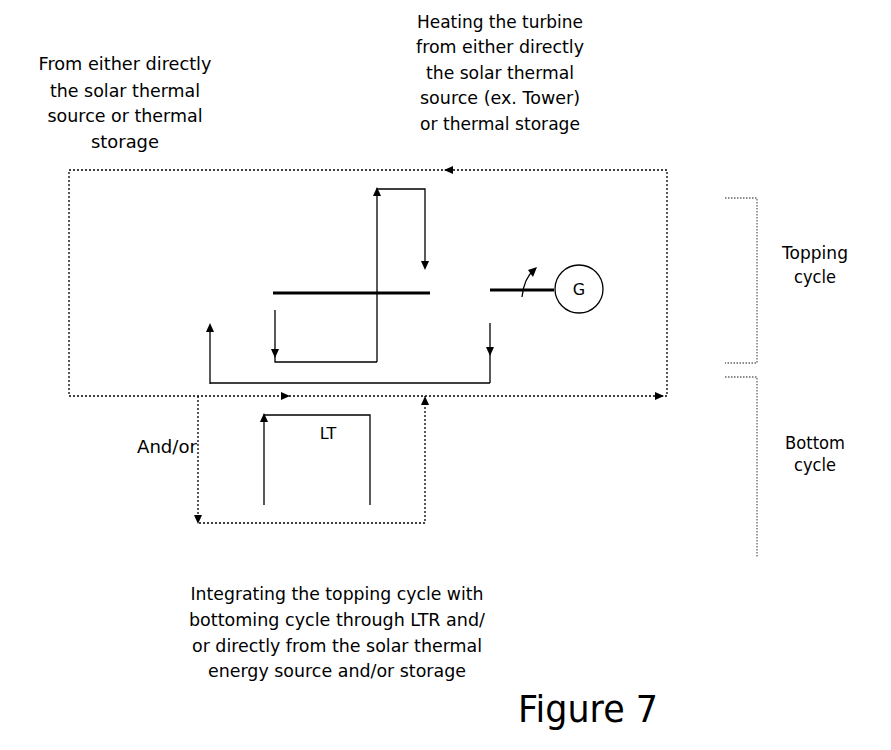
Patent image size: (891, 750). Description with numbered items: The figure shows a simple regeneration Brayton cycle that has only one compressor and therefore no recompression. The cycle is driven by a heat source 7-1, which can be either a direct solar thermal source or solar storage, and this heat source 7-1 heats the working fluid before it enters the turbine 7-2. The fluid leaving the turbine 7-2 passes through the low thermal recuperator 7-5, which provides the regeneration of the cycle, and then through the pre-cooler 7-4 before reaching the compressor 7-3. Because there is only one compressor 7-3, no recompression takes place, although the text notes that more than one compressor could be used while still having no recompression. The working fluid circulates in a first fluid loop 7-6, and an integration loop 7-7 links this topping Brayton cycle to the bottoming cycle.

The heat source 7-1 is at (370, 148).
The turbine 7-2 is at (460, 270).
The compressor 7-3 is at (241, 278).
The pre-cooler 7-4 is at (188, 340).
The low thermal recuperator 7-5 is at (353, 378).
The first fluid loop 7-6 is at (497, 372).
The integration loop 7-7 is at (392, 283).